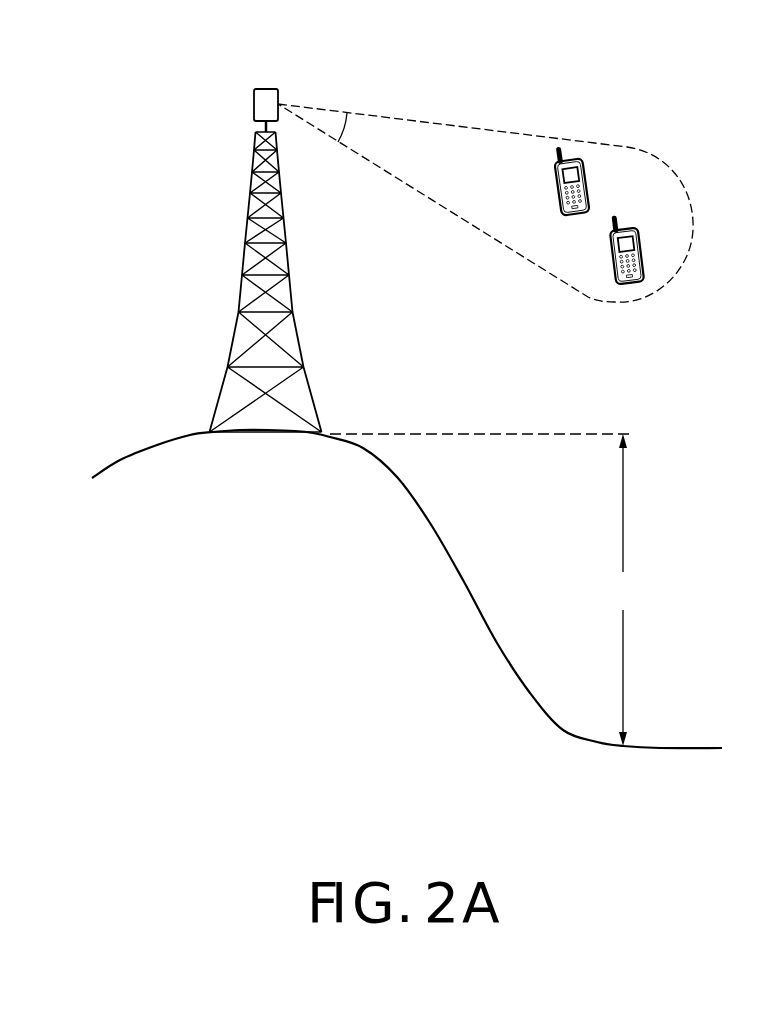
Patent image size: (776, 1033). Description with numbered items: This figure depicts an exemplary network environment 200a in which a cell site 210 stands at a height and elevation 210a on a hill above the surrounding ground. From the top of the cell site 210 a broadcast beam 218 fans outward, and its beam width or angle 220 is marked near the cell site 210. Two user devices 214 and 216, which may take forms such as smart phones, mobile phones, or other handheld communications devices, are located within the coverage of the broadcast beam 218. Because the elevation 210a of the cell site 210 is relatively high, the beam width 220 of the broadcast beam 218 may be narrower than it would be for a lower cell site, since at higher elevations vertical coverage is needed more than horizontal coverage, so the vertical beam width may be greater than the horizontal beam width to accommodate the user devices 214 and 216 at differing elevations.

The network environment 200a is at (586, 47).
The cell site 210 is at (248, 223).
The elevation 210a is at (491, 590).
The user device 214 is at (557, 173).
The user device 216 is at (611, 243).
The broadcast beam 218 is at (495, 131).
The beam width 220 is at (348, 127).